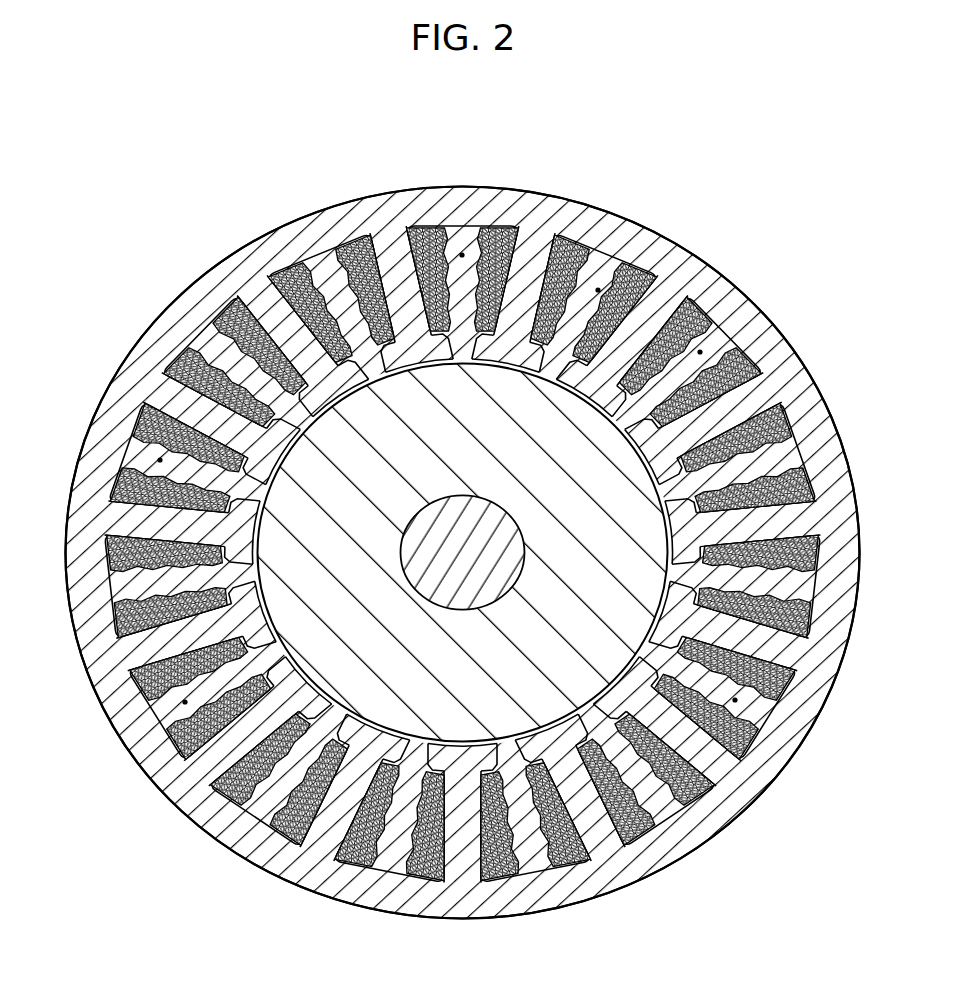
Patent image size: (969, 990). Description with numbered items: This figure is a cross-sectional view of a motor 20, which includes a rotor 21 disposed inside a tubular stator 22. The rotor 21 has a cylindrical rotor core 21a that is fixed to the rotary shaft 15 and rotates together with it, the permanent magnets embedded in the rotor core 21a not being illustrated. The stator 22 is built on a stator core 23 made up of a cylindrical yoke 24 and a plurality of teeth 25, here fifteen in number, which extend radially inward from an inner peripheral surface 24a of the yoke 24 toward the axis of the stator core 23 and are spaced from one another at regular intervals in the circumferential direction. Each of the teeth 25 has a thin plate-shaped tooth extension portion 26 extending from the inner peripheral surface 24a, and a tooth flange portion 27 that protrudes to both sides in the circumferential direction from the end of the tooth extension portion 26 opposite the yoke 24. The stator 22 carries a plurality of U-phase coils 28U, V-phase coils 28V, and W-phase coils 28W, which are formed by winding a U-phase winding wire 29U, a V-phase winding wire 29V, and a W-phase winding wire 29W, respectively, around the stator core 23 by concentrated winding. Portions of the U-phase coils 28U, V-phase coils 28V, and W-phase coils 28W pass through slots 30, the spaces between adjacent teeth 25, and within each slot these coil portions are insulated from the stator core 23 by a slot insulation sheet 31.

The rotary shaft 15 is at (425, 585).
The motor 20 is at (682, 161).
The rotor 21 is at (471, 742).
The rotor core 21a is at (576, 742).
The stator 22 is at (213, 262).
The stator core 23 is at (152, 318).
The yoke 24 is at (441, 200).
The inner peripheral surface 24a is at (598, 236).
The teeth 25 is at (545, 720).
The tooth extension portion 26 is at (742, 768).
The tooth flange portion 27 is at (600, 682).
The U-phase coils 28U is at (626, 860).
The V-phase coils 28V is at (800, 652).
The W-phase coils 28W is at (742, 800).
The U-phase winding wire 29U is at (572, 243).
The V-phase winding wire 29V is at (716, 300).
The W-phase winding wire 29W is at (762, 350).
The slots 30 is at (735, 700).
The slot insulation sheet 31 is at (700, 830).